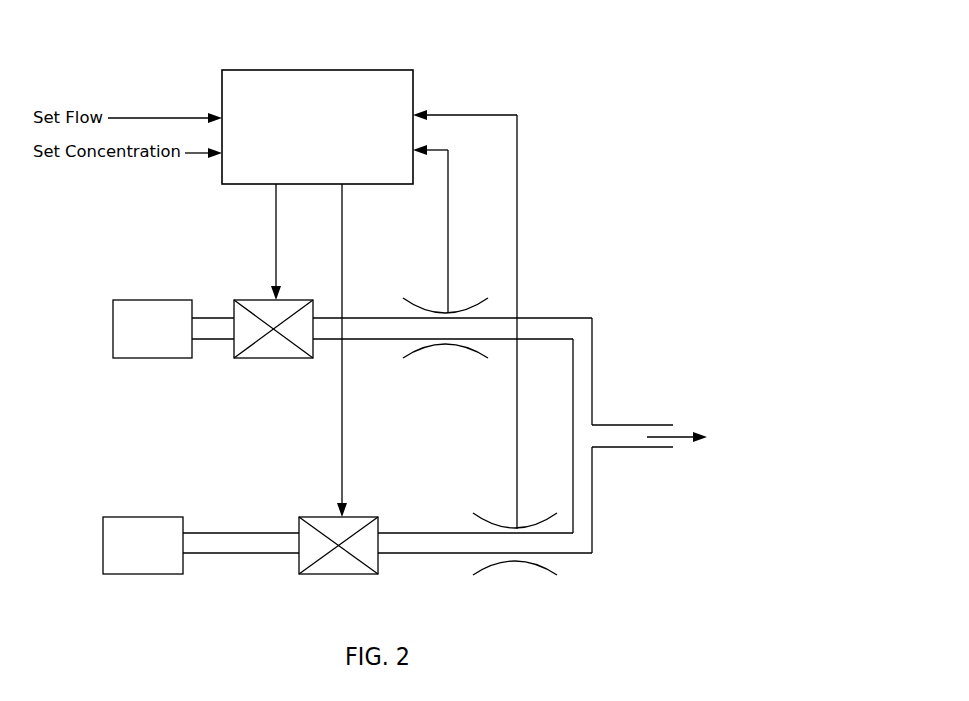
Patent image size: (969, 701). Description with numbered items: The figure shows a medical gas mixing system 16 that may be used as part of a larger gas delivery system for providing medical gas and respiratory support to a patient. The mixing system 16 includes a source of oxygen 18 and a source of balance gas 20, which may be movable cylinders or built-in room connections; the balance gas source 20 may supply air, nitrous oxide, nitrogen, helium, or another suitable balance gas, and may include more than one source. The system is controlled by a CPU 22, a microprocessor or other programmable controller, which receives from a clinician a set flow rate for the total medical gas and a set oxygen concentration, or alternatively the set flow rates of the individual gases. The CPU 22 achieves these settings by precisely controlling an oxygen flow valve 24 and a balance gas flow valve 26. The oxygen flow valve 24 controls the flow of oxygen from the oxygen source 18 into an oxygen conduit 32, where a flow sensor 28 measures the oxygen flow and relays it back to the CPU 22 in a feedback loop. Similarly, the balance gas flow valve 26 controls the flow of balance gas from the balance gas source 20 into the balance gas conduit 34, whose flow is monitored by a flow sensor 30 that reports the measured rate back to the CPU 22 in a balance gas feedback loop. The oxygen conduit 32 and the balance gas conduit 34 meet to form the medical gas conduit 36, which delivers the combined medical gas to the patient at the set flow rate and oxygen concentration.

The mixing system 16 is at (604, 160).
The source of oxygen 18 is at (143, 300).
The source of balance gas 20 is at (140, 517).
The CPU 22 is at (326, 70).
The oxygen flow valve 24 is at (293, 300).
The balance gas flow valve 26 is at (363, 517).
The flow sensor 28 is at (460, 312).
The flow sensor 30 is at (525, 530).
The oxygen conduit 32 is at (352, 330).
The balance gas conduit 34 is at (417, 545).
The medical gas conduit 36 is at (626, 435).